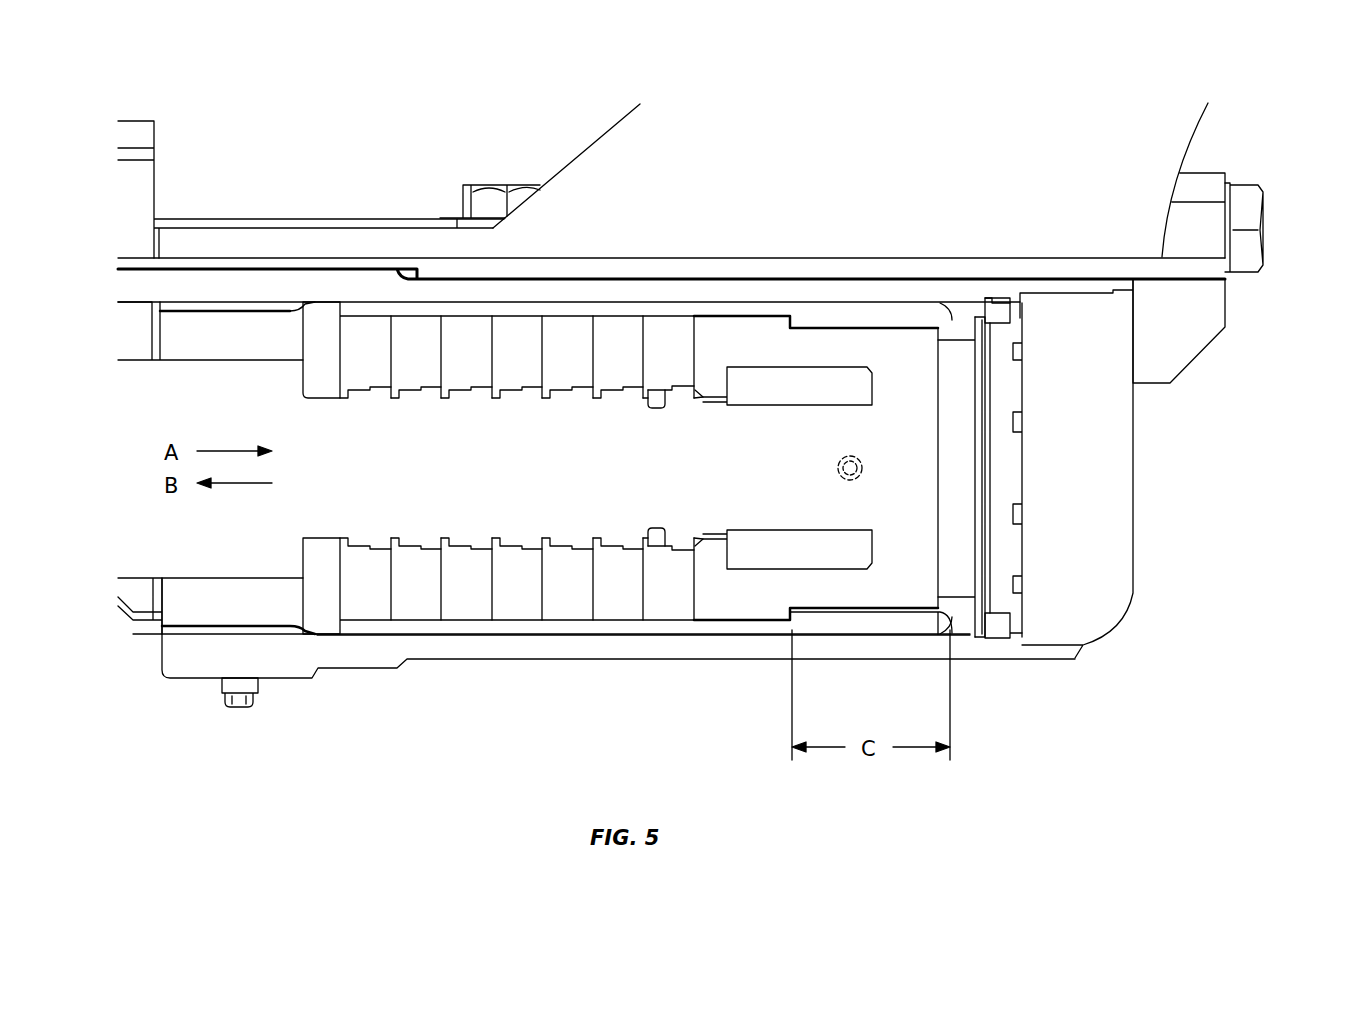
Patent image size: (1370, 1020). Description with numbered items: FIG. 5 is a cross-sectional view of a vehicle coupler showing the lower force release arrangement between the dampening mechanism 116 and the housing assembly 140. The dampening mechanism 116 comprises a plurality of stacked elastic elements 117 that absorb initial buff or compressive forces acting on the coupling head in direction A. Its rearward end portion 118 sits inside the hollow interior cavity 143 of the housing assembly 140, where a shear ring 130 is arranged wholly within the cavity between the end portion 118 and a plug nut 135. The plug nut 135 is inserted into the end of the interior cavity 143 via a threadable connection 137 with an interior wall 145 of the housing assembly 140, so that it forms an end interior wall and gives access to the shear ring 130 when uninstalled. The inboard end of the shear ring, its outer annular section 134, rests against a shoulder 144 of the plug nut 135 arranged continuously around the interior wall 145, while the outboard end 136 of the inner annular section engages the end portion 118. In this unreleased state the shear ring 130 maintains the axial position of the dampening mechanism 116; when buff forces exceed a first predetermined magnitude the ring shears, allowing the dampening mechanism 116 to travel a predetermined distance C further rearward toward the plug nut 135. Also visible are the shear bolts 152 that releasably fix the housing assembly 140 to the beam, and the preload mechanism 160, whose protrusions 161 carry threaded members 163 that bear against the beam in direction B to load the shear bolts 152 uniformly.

The dampening mechanism 116 is at (835, 716).
The stacked elastic elements 117 is at (408, 323).
The end portion of dampening mechanism 118 is at (823, 320).
The shear ring 130 is at (962, 323).
The outer annular section 134 is at (977, 323).
The plug nut 135 is at (1003, 375).
The outboard end of inner annular section 136 is at (947, 325).
The threadable connection 137 is at (1010, 320).
The housing assembly 140 is at (650, 648).
The interior cavity 143 is at (890, 318).
The shoulder of plug nut 144 is at (993, 627).
The interior wall 145 is at (850, 635).
The shear bolts 152 is at (490, 198).
The preload mechanism 160 is at (1245, 243).
The protrusions 161 is at (1215, 182).
The threaded members 163 is at (1283, 210).